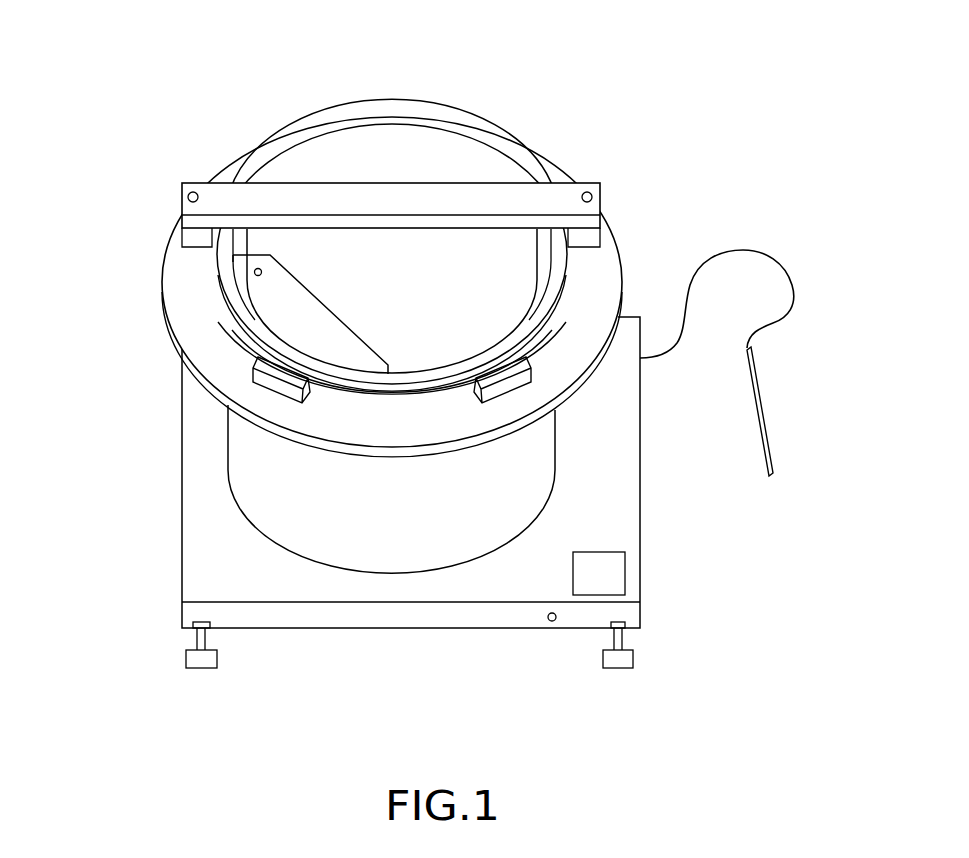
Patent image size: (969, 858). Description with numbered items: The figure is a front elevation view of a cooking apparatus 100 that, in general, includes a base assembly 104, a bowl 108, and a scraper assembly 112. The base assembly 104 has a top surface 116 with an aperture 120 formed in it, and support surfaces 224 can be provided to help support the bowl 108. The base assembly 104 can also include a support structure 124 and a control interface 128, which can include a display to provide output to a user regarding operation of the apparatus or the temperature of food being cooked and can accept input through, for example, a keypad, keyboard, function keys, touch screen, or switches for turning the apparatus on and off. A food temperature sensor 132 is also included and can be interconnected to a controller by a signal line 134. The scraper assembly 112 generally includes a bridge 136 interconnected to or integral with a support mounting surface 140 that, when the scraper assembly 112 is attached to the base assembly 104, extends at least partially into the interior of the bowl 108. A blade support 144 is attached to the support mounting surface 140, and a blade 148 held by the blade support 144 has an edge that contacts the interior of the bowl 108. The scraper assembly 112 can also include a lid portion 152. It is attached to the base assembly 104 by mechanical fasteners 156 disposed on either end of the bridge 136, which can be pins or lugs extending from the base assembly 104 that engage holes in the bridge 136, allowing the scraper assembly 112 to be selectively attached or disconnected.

The cooking apparatus 100 is at (472, 90).
The base assembly 104 is at (170, 466).
The bowl 108 is at (521, 173).
The scraper assembly 112 is at (210, 188).
The top surface 116 is at (178, 317).
The aperture 120 is at (267, 354).
The support structure 124 is at (192, 522).
The control interface 128 is at (626, 572).
The food temperature sensor 132 is at (763, 447).
The signal line 134 is at (746, 250).
The bridge 136 is at (567, 191).
The support mounting surface 140 is at (348, 236).
The blade support 144 is at (265, 292).
The blade 148 is at (232, 261).
The lid portion 152 is at (400, 130).
The mechanical fasteners 156 is at (188, 197).
The support surfaces 224 is at (268, 380).